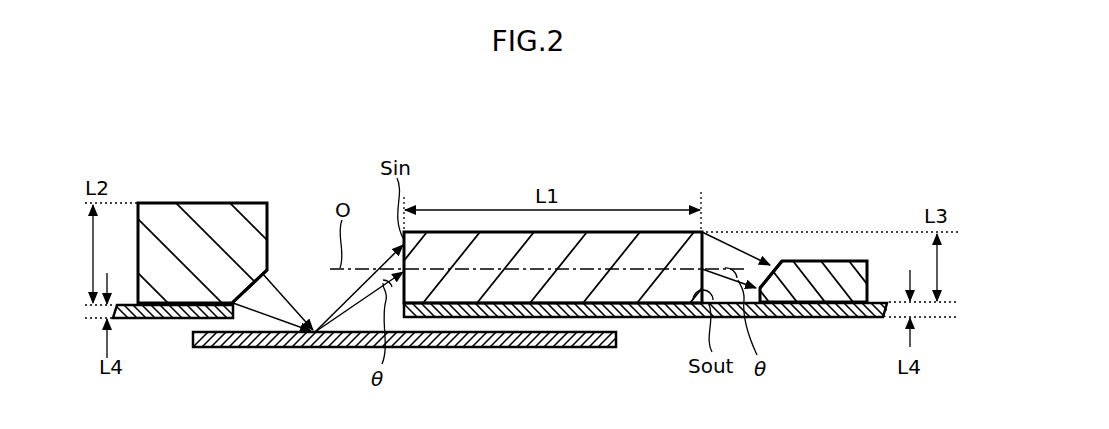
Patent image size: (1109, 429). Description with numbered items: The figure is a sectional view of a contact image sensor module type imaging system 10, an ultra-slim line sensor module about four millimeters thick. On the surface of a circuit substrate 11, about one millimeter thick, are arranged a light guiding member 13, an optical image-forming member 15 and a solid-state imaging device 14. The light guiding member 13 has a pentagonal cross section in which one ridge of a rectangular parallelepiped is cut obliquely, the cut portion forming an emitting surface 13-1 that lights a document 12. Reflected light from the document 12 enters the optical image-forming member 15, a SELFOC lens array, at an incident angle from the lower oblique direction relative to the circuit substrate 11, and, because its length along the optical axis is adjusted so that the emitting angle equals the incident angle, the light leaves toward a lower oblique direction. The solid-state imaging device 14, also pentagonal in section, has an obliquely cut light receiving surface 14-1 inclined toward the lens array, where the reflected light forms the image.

The imaging system 10 is at (631, 180).
The circuit substrate 11 is at (847, 315).
The document 12 is at (573, 347).
The light guiding member 13 is at (180, 220).
The emitting surface 13-1 is at (254, 286).
The solid-state imaging device 14 is at (850, 260).
The light receiving surface 14-1 is at (774, 259).
The optical image-forming member 15 is at (505, 290).